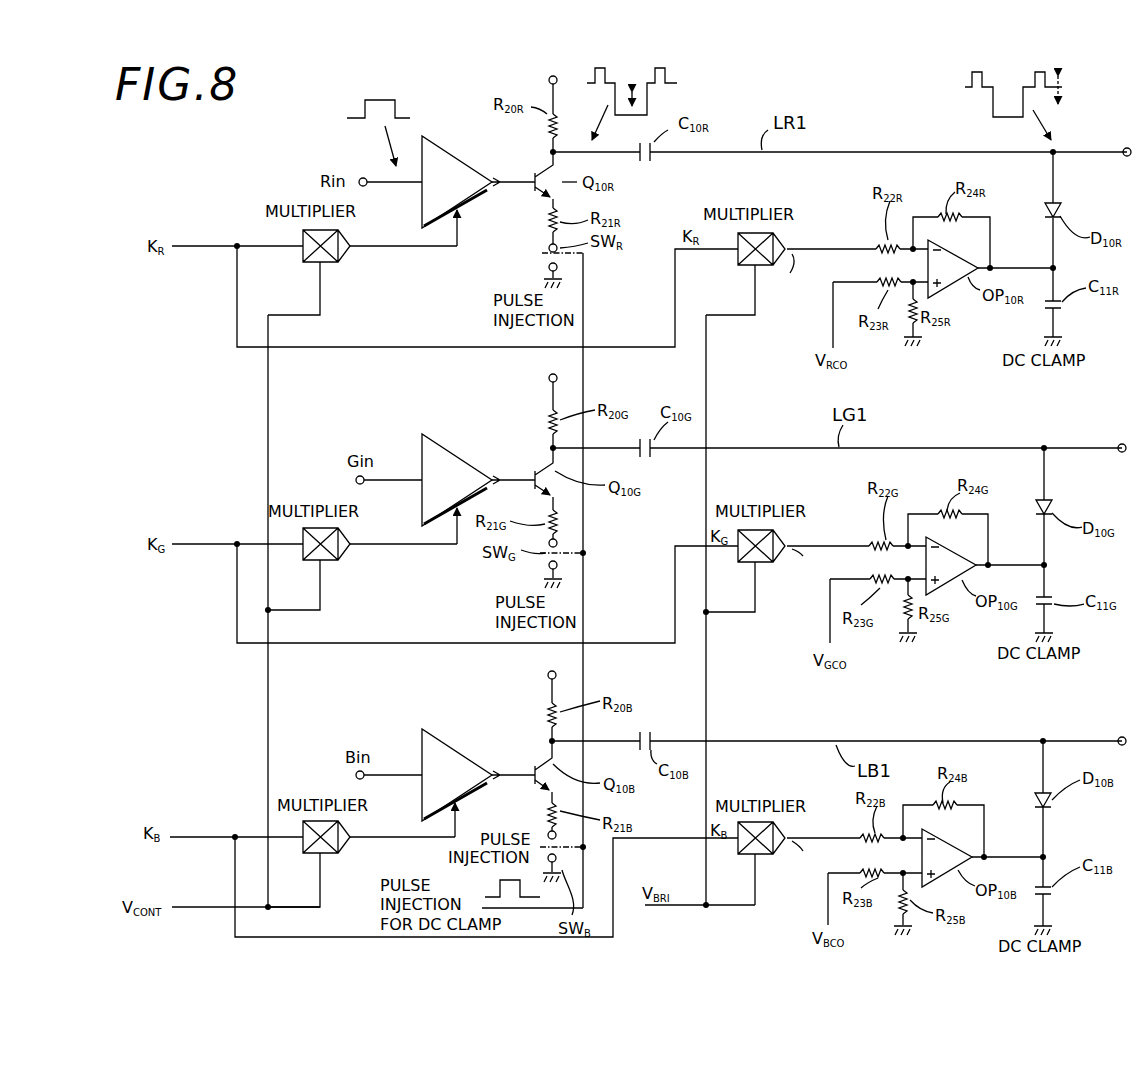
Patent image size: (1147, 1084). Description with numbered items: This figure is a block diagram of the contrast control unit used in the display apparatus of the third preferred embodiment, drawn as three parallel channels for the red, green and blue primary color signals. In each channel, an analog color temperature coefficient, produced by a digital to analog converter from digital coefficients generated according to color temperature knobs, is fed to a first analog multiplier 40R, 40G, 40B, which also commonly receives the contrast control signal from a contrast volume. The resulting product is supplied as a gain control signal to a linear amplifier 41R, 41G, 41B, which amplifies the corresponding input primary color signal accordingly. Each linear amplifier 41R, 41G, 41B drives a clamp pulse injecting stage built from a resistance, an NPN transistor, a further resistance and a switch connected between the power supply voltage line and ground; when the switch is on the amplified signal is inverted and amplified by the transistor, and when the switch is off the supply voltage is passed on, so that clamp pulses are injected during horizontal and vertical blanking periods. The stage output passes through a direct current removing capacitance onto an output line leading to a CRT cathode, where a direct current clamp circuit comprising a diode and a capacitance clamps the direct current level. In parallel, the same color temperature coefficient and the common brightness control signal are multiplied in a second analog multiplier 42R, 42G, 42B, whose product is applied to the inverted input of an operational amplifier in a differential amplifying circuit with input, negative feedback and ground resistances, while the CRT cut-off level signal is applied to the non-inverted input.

The analog multiplier 40R is at (342, 258).
The linear amplifier 41R is at (447, 150).
The analog multiplier 42R is at (788, 246).
The analog multiplier 40G is at (342, 556).
The linear amplifier 41G is at (452, 448).
The analog multiplier 42G is at (789, 543).
The analog multiplier 40B is at (343, 849).
The linear amplifier 41B is at (449, 742).
The analog multiplier 42B is at (789, 836).